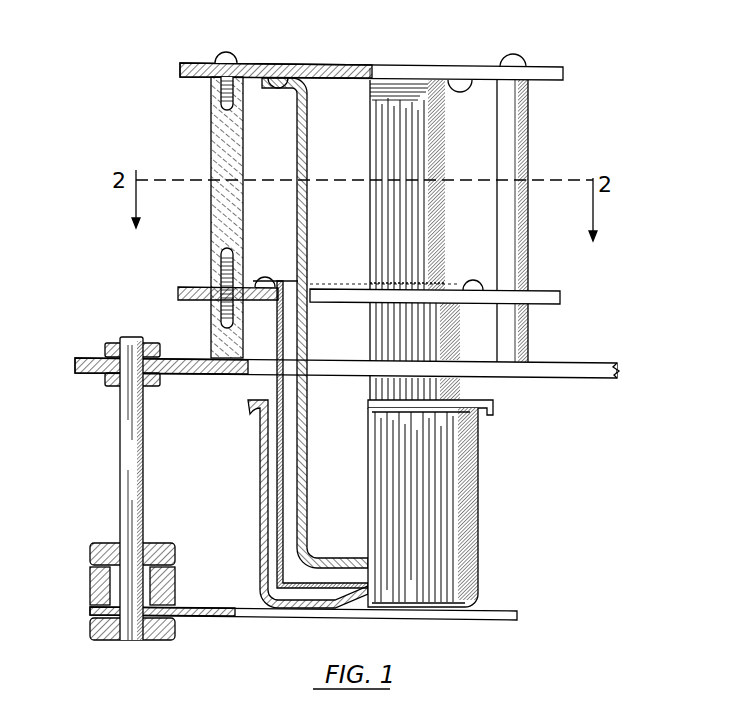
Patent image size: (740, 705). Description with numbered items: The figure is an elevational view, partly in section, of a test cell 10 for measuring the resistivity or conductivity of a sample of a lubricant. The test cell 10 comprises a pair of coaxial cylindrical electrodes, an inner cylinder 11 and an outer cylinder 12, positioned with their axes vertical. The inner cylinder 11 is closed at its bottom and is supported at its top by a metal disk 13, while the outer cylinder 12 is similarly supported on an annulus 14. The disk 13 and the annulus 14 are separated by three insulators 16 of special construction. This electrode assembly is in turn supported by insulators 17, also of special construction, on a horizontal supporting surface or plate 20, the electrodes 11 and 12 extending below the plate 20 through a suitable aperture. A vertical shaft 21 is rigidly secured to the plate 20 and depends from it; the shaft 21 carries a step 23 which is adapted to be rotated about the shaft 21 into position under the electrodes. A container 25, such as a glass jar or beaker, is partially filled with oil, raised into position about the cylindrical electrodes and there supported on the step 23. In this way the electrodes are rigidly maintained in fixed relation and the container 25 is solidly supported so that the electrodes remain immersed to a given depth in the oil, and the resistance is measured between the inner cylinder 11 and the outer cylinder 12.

The test cell 10 is at (431, 52).
The inner cylinder 11 is at (302, 423).
The outer cylinder 12 is at (280, 456).
The metal disk 13 is at (281, 63).
The annulus 14 is at (192, 287).
The insulators 16 is at (211, 143).
The insulators 17 is at (210, 315).
The plate 20 is at (93, 372).
The vertical shaft 21 is at (143, 498).
The step 23 is at (292, 613).
The container 25 is at (478, 498).